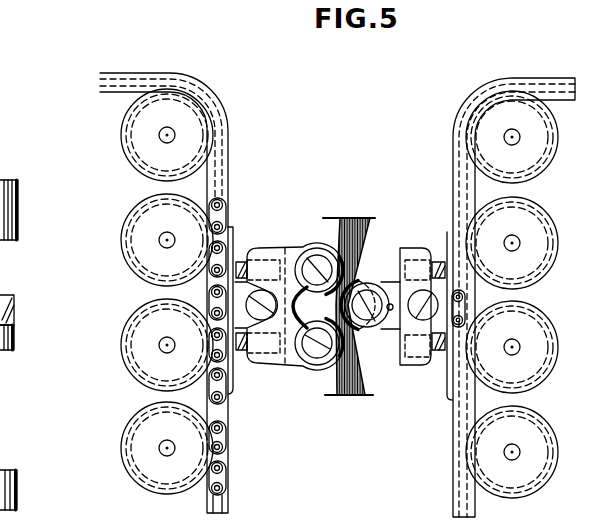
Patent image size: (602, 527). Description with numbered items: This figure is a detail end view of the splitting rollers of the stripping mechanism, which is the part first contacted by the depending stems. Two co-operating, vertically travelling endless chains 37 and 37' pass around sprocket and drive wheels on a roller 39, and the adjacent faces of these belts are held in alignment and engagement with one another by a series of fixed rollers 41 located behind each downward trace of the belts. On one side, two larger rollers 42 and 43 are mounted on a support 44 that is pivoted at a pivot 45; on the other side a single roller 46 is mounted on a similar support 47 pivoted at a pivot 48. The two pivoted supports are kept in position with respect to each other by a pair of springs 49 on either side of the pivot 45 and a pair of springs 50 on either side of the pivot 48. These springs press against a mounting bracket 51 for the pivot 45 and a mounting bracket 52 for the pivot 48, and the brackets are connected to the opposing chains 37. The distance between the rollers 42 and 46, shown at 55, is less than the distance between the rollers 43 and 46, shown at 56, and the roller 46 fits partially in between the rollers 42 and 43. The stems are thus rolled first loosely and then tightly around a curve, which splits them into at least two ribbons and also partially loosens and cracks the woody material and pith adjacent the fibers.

The endless chain 37 is at (337, 295).
The endless chain belt 37' is at (337, 346).
The roller 39 is at (177, 120).
The fixed rollers 41 is at (138, 277).
The roller 42 is at (334, 250).
The roller 43 is at (313, 367).
The support 44 is at (270, 248).
The pivot 45 is at (262, 320).
The roller 46 is at (368, 328).
The support 47 is at (401, 248).
The pivot 48 is at (424, 318).
The springs 49 is at (242, 262).
The springs 50 is at (437, 262).
The mounting bracket 51 is at (233, 393).
The mounting bracket 52 is at (447, 393).
The distance between rollers 42 and 46 55 is at (358, 284).
The distance between rollers 43 and 46 56 is at (338, 330).